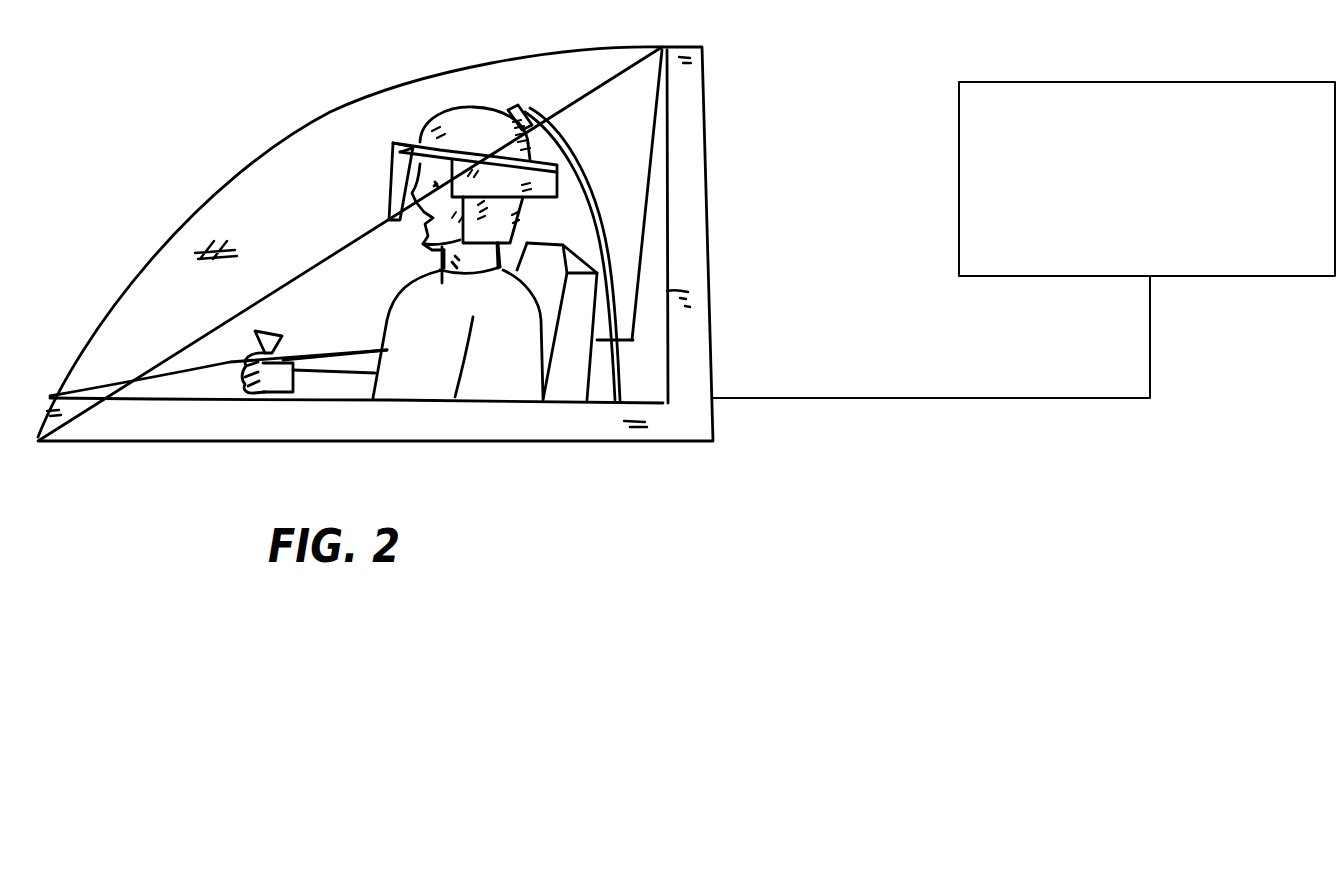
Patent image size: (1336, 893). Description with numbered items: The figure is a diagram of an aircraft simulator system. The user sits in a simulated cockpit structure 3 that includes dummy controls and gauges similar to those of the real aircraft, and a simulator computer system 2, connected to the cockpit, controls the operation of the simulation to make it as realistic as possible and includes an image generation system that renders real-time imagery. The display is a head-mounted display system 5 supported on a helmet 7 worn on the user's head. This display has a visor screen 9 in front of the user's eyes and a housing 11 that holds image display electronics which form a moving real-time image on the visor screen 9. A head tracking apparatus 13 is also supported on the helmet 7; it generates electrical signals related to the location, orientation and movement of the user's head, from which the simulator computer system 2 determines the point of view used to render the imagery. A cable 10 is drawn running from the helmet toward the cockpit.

The simulator computer system 2 is at (1265, 264).
The simulated cockpit structure 3 is at (221, 172).
The head-mounted display system 5 is at (386, 200).
The helmet 7 is at (463, 128).
The visor screen 9 is at (392, 170).
The cable 10 is at (600, 217).
The housing 11 is at (505, 200).
The head tracking apparatus 13 is at (520, 106).